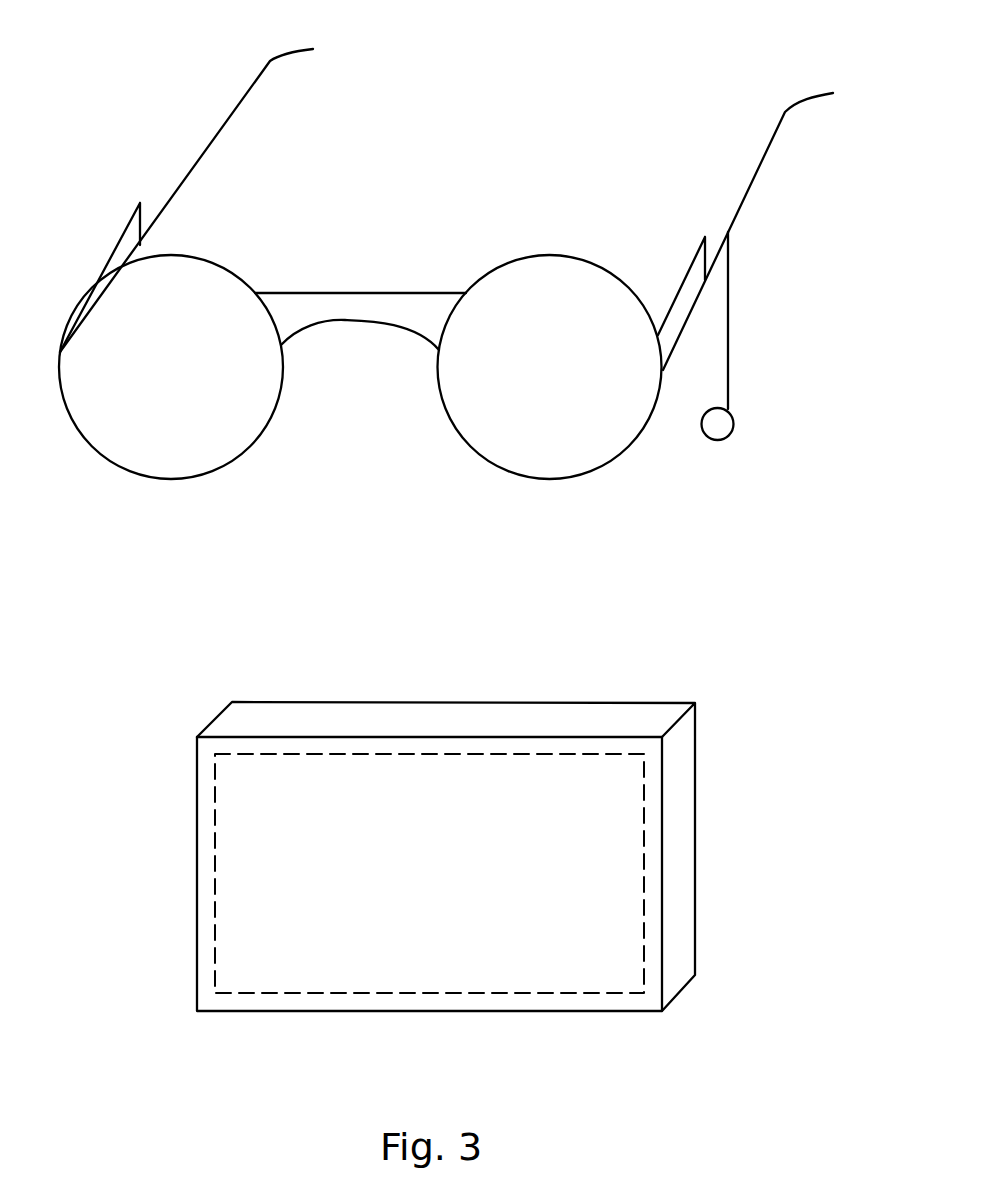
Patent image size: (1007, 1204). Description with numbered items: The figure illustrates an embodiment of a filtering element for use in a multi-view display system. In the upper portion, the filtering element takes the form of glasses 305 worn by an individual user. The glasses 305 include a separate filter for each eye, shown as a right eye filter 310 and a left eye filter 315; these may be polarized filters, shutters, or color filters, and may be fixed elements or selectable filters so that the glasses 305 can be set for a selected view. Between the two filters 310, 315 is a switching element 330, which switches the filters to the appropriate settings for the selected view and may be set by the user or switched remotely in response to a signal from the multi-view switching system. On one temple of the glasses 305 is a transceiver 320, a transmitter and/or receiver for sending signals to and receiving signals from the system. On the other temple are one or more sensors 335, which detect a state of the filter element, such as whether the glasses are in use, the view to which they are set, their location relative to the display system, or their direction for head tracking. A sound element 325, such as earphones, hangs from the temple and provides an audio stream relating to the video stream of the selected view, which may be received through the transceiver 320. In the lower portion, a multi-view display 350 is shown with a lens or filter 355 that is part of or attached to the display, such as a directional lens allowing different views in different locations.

The glasses 305 is at (446, 209).
The right eye filter 310 is at (171, 367).
The left eye filter 315 is at (550, 367).
The transceiver 320 is at (86, 277).
The sound element 325 is at (746, 336).
The switching element 330 is at (360, 309).
The sensors 335 is at (661, 276).
The multi-view display 350 is at (446, 843).
The lens or filter 355 is at (429, 873).